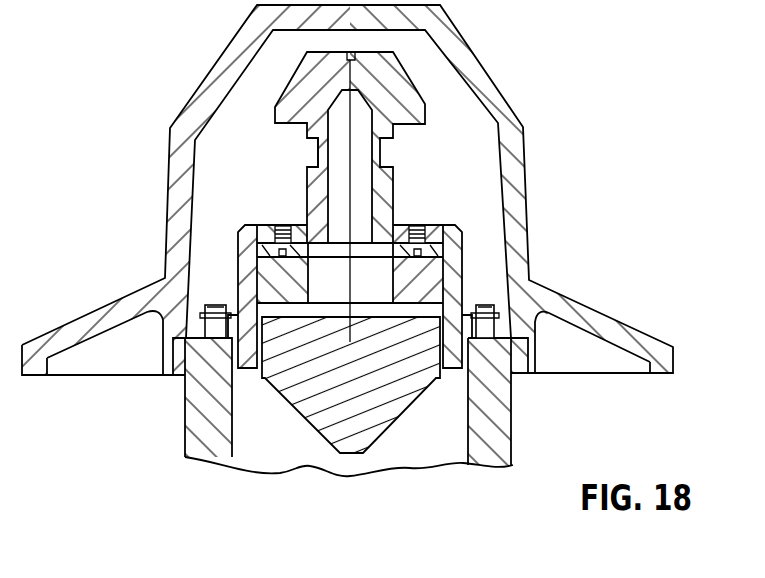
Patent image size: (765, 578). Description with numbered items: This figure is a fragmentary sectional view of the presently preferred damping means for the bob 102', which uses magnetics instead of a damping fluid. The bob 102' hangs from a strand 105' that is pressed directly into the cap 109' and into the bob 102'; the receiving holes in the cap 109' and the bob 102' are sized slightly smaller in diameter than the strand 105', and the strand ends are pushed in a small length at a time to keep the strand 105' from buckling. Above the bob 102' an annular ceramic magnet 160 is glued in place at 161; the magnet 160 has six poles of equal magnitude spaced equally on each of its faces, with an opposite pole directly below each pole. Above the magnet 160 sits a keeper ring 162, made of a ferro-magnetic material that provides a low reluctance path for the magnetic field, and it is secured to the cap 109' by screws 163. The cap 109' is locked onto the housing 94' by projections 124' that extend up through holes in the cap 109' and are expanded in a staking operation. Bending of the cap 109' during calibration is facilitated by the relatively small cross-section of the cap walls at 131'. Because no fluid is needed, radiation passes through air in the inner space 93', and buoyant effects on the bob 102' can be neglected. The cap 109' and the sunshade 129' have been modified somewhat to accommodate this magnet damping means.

The sunshade 129' is at (347, 190).
The cap 109' is at (374, 147).
The cap walls 131' is at (279, 149).
The strand 105' is at (390, 201).
The keeper ring 162 is at (265, 244).
The screws 163 is at (285, 225).
The annular ceramic magnet 160 is at (262, 272).
The glue location 161 is at (257, 303).
The projections 124' is at (348, 299).
The inner space 93' is at (188, 397).
The housing 94' is at (516, 401).
The bob 102' is at (357, 385).